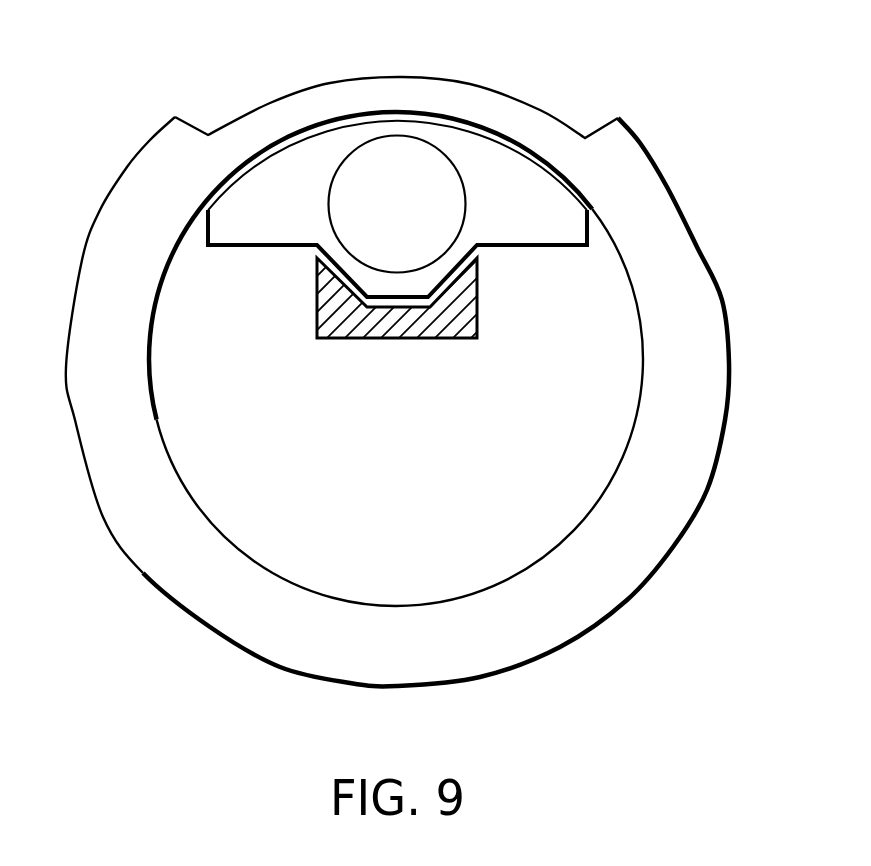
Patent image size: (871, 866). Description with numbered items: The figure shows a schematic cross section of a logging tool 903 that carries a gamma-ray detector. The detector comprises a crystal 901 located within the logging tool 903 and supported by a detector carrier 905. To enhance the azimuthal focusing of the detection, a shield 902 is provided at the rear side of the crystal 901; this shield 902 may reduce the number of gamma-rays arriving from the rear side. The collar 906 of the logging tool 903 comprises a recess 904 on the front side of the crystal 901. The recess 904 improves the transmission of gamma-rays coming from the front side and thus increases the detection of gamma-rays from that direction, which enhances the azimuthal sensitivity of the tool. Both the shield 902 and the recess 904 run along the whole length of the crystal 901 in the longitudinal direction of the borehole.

The crystal 901 is at (466, 197).
The shield 902 is at (395, 340).
The logging tool 903 is at (738, 532).
The recess 904 is at (405, 65).
The detector carrier 905 is at (518, 245).
The collar 906 is at (104, 517).